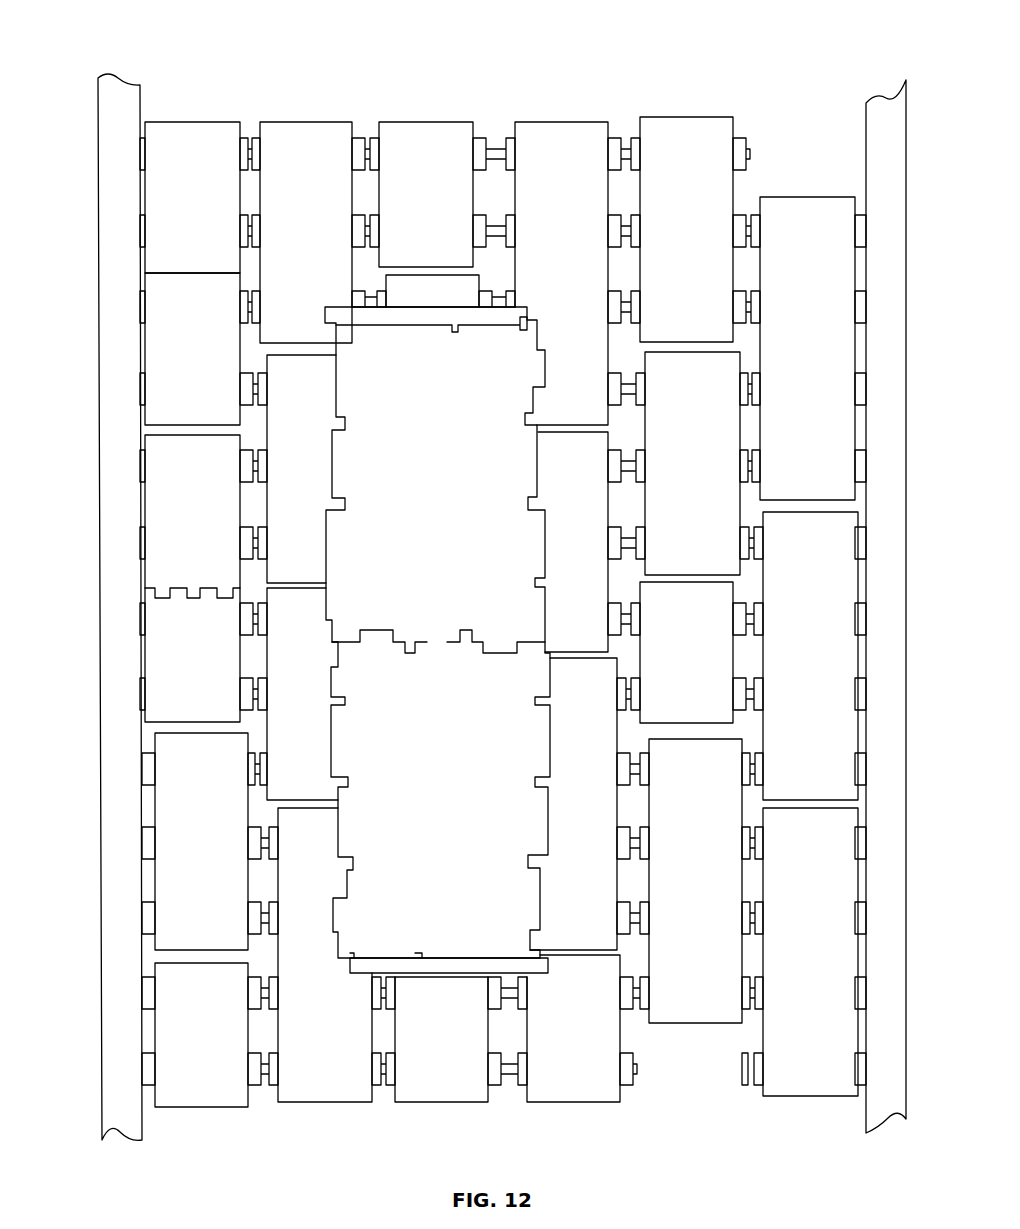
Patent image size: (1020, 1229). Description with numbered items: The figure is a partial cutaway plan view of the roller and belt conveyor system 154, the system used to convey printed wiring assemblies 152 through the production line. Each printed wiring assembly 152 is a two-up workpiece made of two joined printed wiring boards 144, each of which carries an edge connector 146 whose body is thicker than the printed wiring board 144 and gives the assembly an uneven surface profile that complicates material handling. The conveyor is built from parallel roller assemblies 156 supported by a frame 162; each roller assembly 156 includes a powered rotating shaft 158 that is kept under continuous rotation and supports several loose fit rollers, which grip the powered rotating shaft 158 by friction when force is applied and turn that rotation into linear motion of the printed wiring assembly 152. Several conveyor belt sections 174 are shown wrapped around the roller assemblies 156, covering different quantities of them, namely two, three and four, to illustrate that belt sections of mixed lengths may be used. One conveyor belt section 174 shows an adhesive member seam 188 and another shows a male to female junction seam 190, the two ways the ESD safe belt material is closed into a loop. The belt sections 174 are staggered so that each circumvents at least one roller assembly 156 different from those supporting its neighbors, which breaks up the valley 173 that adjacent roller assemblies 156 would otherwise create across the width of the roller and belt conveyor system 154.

The roller and belt conveyor system 154 is at (522, 54).
The printed wiring board 144 is at (395, 378).
The edge connector 146 is at (365, 968).
The printed wiring assembly 152 is at (541, 988).
The roller assembly 156 is at (618, 132).
The powered rotating shaft 158 is at (494, 152).
The frame 162 is at (890, 150).
The valley 173 is at (162, 430).
The conveyor belt section 174 is at (812, 880).
The adhesive member seam 188 is at (175, 275).
The male to female junction seam 190 is at (180, 587).